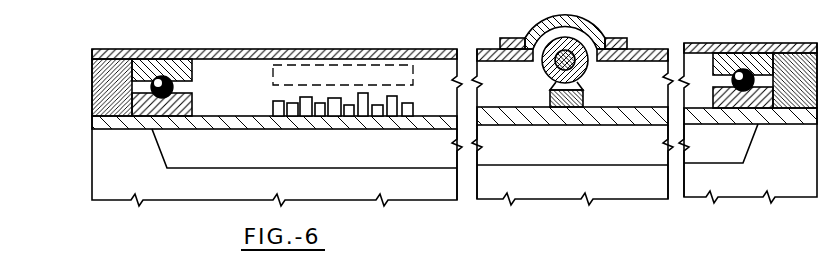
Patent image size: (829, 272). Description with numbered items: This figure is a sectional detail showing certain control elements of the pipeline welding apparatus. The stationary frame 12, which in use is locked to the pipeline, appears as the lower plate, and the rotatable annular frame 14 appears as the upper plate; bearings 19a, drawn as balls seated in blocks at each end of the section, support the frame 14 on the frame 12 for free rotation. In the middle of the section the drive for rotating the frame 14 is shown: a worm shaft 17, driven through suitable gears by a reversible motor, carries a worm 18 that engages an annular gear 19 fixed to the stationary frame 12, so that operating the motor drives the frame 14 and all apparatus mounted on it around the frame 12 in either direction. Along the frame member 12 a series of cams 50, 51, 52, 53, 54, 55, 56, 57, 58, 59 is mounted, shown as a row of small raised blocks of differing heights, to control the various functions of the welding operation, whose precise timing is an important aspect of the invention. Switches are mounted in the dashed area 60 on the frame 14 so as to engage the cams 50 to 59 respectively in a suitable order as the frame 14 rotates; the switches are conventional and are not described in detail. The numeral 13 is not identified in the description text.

The frame 12 is at (532, 125).
The recess in base plate 13 is at (165, 145).
The rotatable annular frame 14 is at (235, 48).
The worm shaft 17 is at (546, 66).
The worm 18 is at (586, 65).
The annular gear 19 is at (551, 92).
The bearings 19a is at (176, 86).
The cam 50 is at (342, 117).
The cam 51 is at (283, 117).
The cam 52 is at (295, 117).
The cam 53 is at (307, 117).
The cam 54 is at (321, 117).
The cam 55 is at (338, 117).
The cam 56 is at (366, 117).
The cam 57 is at (380, 117).
The cam 58 is at (398, 100).
The cam 59 is at (411, 105).
The switch area 60 is at (333, 72).